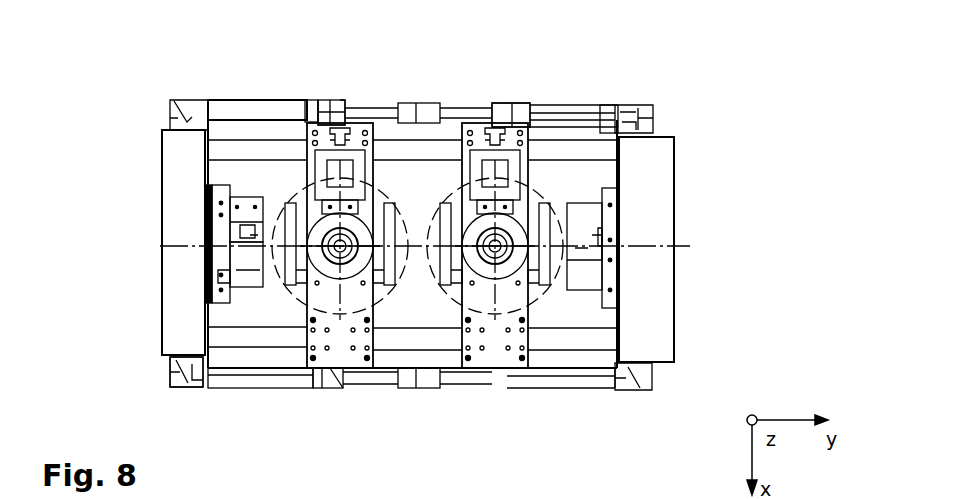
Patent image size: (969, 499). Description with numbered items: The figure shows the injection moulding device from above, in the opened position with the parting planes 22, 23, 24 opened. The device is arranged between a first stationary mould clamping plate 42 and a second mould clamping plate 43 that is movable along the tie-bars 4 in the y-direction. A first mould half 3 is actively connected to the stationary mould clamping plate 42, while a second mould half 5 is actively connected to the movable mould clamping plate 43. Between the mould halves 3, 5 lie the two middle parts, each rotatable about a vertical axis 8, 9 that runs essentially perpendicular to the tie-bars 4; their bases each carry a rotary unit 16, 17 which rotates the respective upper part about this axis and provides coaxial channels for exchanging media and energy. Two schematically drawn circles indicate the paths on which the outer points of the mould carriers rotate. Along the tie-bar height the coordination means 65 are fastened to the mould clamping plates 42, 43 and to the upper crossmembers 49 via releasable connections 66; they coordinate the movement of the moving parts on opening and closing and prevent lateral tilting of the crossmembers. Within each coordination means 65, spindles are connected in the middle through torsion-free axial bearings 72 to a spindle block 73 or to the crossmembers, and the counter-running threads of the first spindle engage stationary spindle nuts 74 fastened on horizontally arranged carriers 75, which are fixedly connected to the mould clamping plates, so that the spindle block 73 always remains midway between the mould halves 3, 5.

The first mould half 3 is at (618, 277).
The tie-bars 4 is at (248, 147).
The second mould half 5 is at (203, 208).
The vertical axis 8 is at (620, 235).
The vertical axis 9 is at (205, 252).
The rotary unit 16 is at (205, 272).
The rotary unit 17 is at (618, 303).
The parting plane 22 is at (558, 297).
The parting plane 23 is at (274, 290).
The parting plane 24 is at (425, 302).
The first stationary mould clamping plate 42 is at (643, 194).
The second mould clamping plate 43 is at (183, 188).
The upper crossmembers 49 is at (332, 100).
The coordination means 65 is at (467, 100).
The releasable connections 66 is at (185, 123).
The torsion-free axial bearings 72 is at (318, 380).
The spindle block 73 is at (415, 103).
The spindle nuts 74 is at (307, 113).
The carriers 75 is at (263, 108).